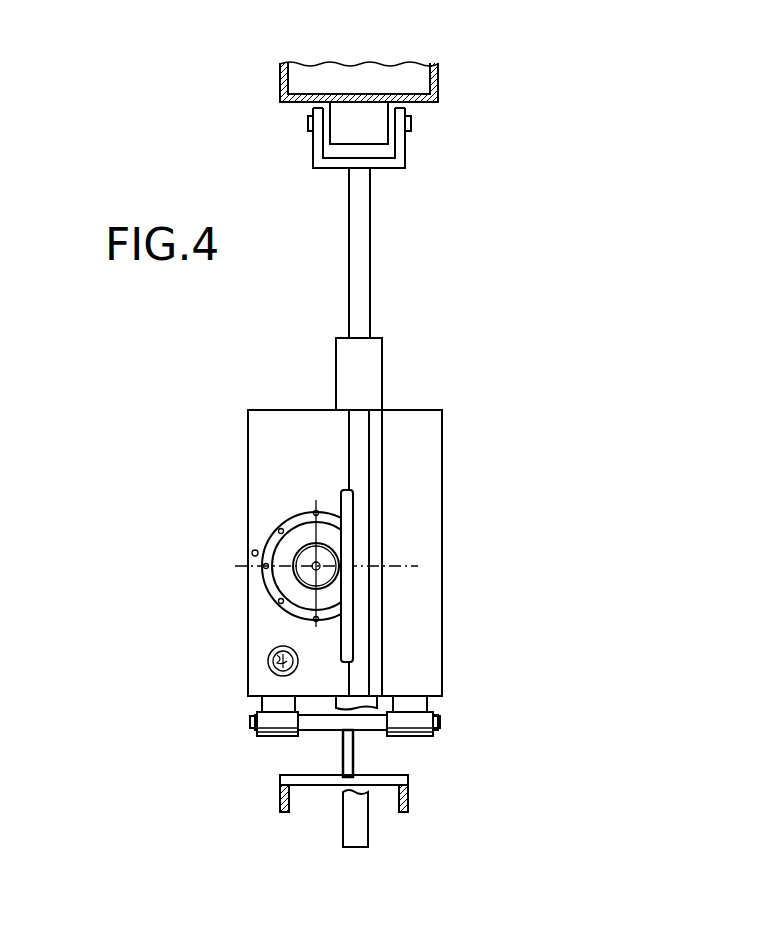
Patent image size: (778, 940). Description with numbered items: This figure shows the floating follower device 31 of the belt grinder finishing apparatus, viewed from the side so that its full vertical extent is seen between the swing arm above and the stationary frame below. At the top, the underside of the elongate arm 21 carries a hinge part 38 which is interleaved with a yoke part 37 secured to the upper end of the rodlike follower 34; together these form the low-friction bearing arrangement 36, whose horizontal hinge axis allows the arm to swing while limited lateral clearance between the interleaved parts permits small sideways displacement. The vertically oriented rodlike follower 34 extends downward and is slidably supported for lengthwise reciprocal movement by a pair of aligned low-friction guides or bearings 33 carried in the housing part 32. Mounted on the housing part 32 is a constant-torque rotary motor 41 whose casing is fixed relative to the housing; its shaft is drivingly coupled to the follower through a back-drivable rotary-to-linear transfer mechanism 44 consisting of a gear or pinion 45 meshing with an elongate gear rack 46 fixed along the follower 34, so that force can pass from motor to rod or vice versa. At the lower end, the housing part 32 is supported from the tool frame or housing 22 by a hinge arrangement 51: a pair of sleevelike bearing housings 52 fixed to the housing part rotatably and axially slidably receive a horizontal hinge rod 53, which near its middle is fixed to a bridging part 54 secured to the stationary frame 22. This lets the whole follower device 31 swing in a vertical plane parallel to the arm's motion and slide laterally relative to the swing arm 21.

The elongate arm 21 is at (441, 80).
The tool frame or housing 22 is at (280, 795).
The follower device 31 is at (411, 124).
The housing part 32 is at (428, 595).
The low-friction guides or bearings 33 is at (375, 358).
The rodlike follower 34 is at (362, 232).
The low-friction bearing arrangement 36 is at (352, 104).
The yoke part 37 is at (405, 152).
The hinge part 38 is at (355, 113).
The rotary motor 41 is at (298, 597).
The rotary-to-linear transfer mechanism 44 is at (286, 552).
The gear or pinion 45 is at (293, 580).
The gear rack 46 is at (347, 503).
The hinge arrangement 51 is at (304, 798).
The sleevelike bearing housings 52 is at (263, 724).
The hinge rod 53 is at (313, 725).
The bridging part 54 is at (343, 767).